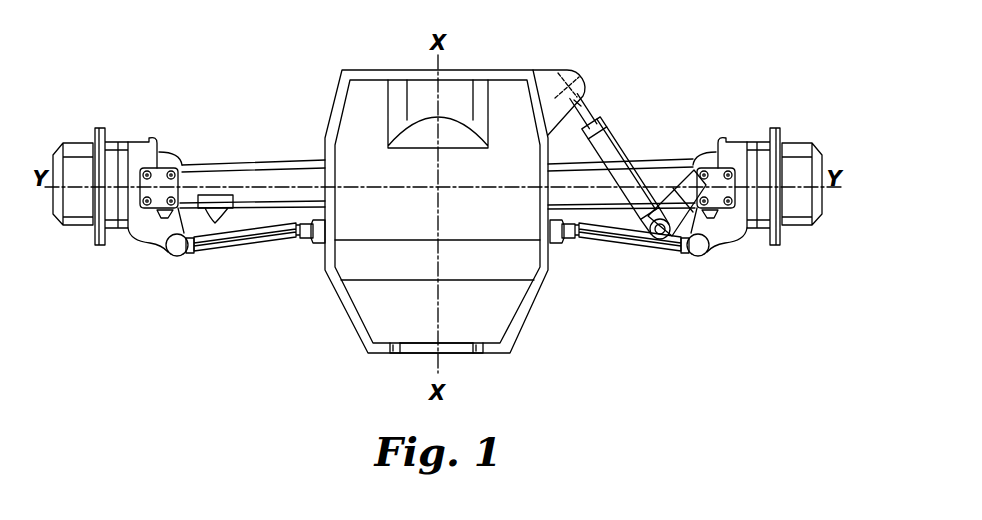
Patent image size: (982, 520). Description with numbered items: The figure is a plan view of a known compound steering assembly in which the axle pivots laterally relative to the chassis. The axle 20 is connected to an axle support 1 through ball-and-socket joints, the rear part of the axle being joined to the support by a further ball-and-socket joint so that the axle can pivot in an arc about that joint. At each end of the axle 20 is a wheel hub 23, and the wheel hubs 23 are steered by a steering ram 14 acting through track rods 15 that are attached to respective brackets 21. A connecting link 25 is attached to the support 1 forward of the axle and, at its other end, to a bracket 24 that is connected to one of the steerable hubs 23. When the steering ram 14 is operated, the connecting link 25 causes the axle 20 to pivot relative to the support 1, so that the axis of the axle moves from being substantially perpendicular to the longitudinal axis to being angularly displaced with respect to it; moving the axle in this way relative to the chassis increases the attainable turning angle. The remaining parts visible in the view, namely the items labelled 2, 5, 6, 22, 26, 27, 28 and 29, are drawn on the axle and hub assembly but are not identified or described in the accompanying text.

The axle support 1 is at (352, 320).
The differential cover 2 is at (486, 108).
The housing bottom 5 is at (448, 354).
The mounting feet 6 is at (396, 354).
The steering ram 14 is at (320, 238).
The track rods 15 is at (232, 245).
The axle 20 is at (249, 156).
The brackets 21 is at (170, 257).
The steering knuckle 22 is at (158, 178).
The wheel hubs 23 is at (78, 215).
The bracket 24 is at (668, 190).
The connecting link 25 is at (603, 132).
The pivot pin 26 is at (658, 240).
The cylinder bracket 27 is at (572, 92).
The wheel flange 28 is at (136, 143).
The steering arm 29 is at (156, 238).